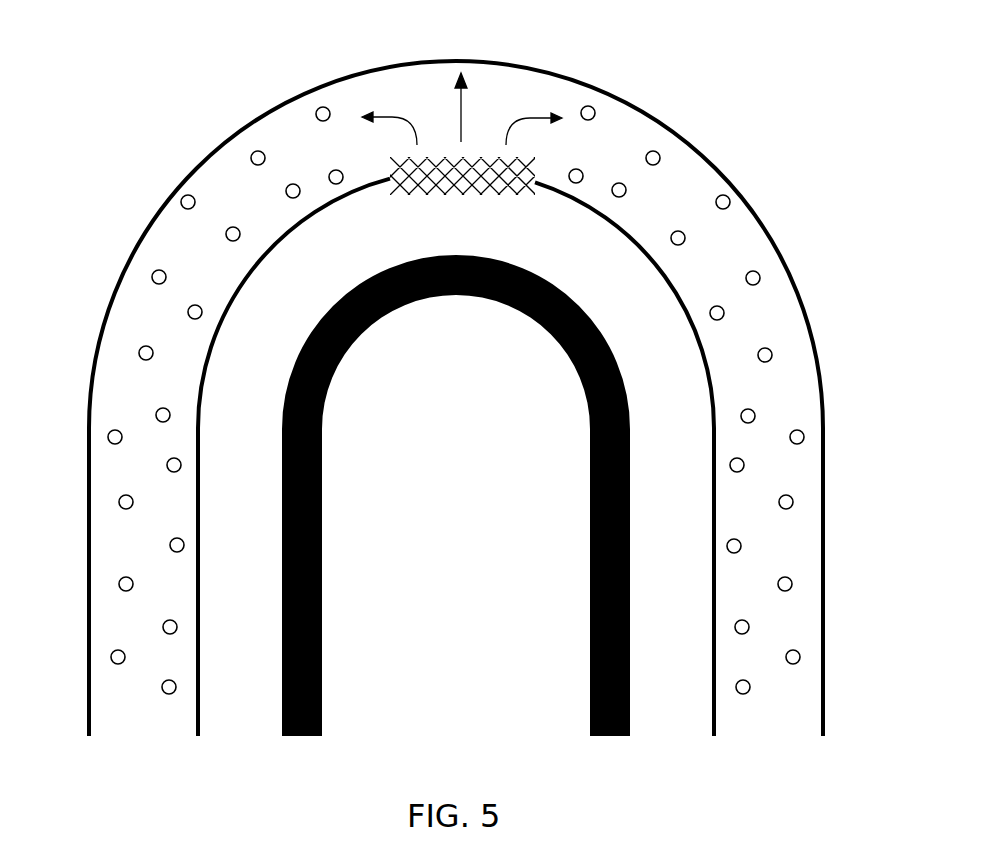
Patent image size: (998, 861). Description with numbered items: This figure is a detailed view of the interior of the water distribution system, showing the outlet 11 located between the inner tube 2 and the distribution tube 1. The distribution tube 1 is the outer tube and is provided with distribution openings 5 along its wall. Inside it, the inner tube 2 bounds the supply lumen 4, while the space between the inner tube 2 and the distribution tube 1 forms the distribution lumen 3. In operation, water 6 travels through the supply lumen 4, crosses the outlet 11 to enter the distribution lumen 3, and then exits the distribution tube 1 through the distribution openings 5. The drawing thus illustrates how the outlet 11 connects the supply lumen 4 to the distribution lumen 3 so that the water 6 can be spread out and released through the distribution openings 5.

The distribution tube 1 is at (808, 316).
The inner tube 2 is at (715, 492).
The distribution lumen 3 is at (540, 102).
The supply lumen 4 is at (690, 610).
The distribution openings 5 is at (143, 345).
The water 6 is at (387, 115).
The outlet 11 is at (470, 158).